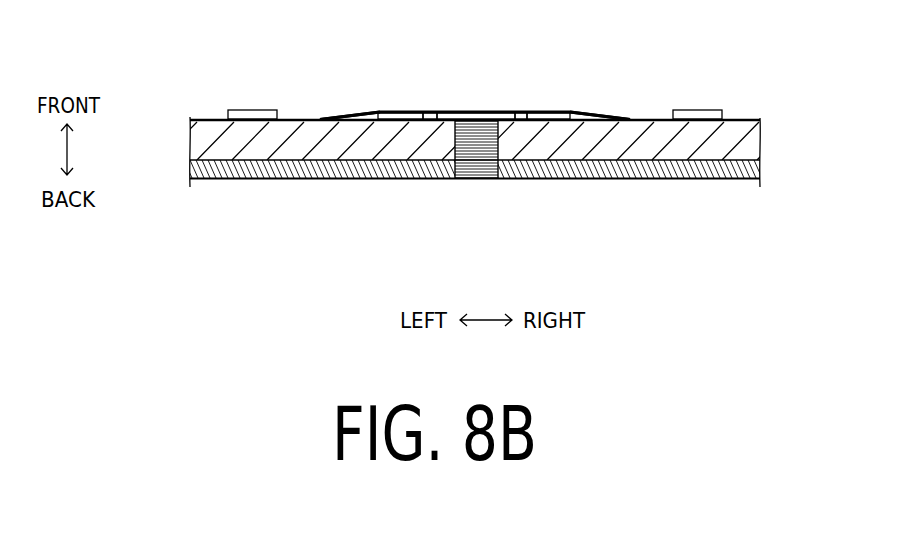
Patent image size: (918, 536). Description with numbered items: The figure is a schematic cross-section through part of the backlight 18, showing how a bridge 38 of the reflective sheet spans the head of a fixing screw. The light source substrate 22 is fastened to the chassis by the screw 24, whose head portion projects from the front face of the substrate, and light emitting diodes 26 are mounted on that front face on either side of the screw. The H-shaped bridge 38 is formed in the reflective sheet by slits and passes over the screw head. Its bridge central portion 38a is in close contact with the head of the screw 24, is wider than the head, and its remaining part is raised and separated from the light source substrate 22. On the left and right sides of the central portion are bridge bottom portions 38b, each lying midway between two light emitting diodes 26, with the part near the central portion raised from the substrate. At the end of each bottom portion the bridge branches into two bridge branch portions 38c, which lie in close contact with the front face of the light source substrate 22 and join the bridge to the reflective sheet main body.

The backlight 18 is at (270, 170).
The light source substrate 22 is at (216, 146).
The screw 24 is at (480, 150).
The light emitting diode 26 is at (252, 110).
The bridge 38 is at (430, 112).
The bridge central portion 38a is at (497, 110).
The bridge bottom portion 38b is at (372, 112).
The bridge branch portion 38c is at (320, 118).